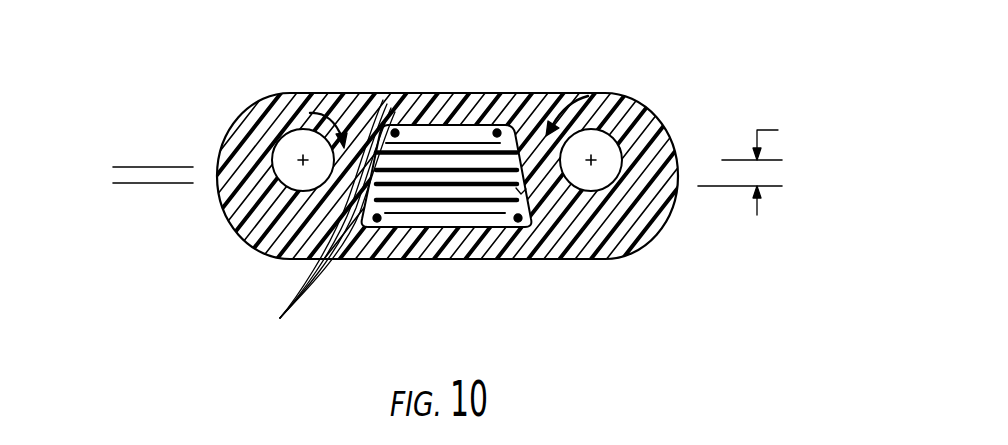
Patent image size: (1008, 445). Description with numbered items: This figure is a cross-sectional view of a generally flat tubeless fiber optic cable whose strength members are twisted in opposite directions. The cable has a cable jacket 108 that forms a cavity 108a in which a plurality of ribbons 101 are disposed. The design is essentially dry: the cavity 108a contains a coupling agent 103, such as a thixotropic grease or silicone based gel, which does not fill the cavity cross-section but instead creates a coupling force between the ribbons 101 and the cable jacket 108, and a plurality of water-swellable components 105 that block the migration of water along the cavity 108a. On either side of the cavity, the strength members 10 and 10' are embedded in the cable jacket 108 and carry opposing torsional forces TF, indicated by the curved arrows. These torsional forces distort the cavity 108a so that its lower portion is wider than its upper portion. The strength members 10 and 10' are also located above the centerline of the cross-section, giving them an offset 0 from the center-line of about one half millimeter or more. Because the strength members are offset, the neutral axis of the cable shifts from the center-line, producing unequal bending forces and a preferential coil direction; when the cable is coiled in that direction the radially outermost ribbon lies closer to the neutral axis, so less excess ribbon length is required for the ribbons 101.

The strength member 10 is at (478, 174).
The strength member 10' is at (197, 248).
The ribbons 101 is at (323, 227).
The coupling agent 103 is at (530, 148).
The water-swellable components 105 is at (497, 133).
The cable jacket 108 is at (247, 131).
The cavity 108a is at (528, 210).
The torsional force TF is at (330, 127).
The offset 0 is at (745, 162).